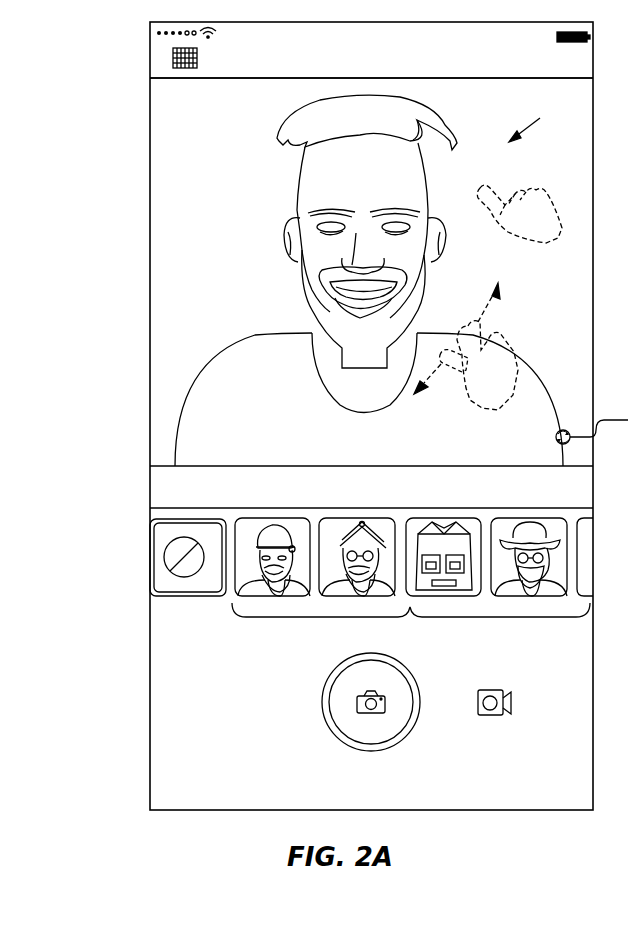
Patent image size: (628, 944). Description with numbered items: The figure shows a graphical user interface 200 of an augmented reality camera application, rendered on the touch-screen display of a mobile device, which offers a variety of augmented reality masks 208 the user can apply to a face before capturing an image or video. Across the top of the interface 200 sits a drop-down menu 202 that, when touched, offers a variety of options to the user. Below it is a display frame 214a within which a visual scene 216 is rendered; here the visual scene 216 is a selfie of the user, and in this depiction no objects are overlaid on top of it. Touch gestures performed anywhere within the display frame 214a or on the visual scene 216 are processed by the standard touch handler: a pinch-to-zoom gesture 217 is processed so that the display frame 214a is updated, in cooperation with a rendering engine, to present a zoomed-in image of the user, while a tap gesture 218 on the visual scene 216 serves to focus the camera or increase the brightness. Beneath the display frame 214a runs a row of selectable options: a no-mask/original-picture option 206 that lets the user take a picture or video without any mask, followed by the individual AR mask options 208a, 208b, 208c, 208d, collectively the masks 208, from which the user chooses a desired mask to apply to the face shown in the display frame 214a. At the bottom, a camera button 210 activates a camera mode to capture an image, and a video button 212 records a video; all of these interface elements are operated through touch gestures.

The graphical user interface 200 is at (150, 52).
The drop-down menu 202 is at (186, 70).
The display frame 214a is at (490, 78).
The visual scene 216 is at (533, 118).
The tap gesture 218 is at (519, 214).
The pinch-to-zoom gesture 217 is at (466, 346).
The no-mask/original-picture option 206 is at (182, 600).
The augmented reality masks 208 is at (411, 627).
The AR mask option 208a is at (275, 518).
The AR mask option 208b is at (357, 518).
The AR mask option 208c is at (443, 518).
The AR mask option 208d is at (525, 518).
The camera button 210 is at (322, 738).
The video button 212 is at (489, 720).